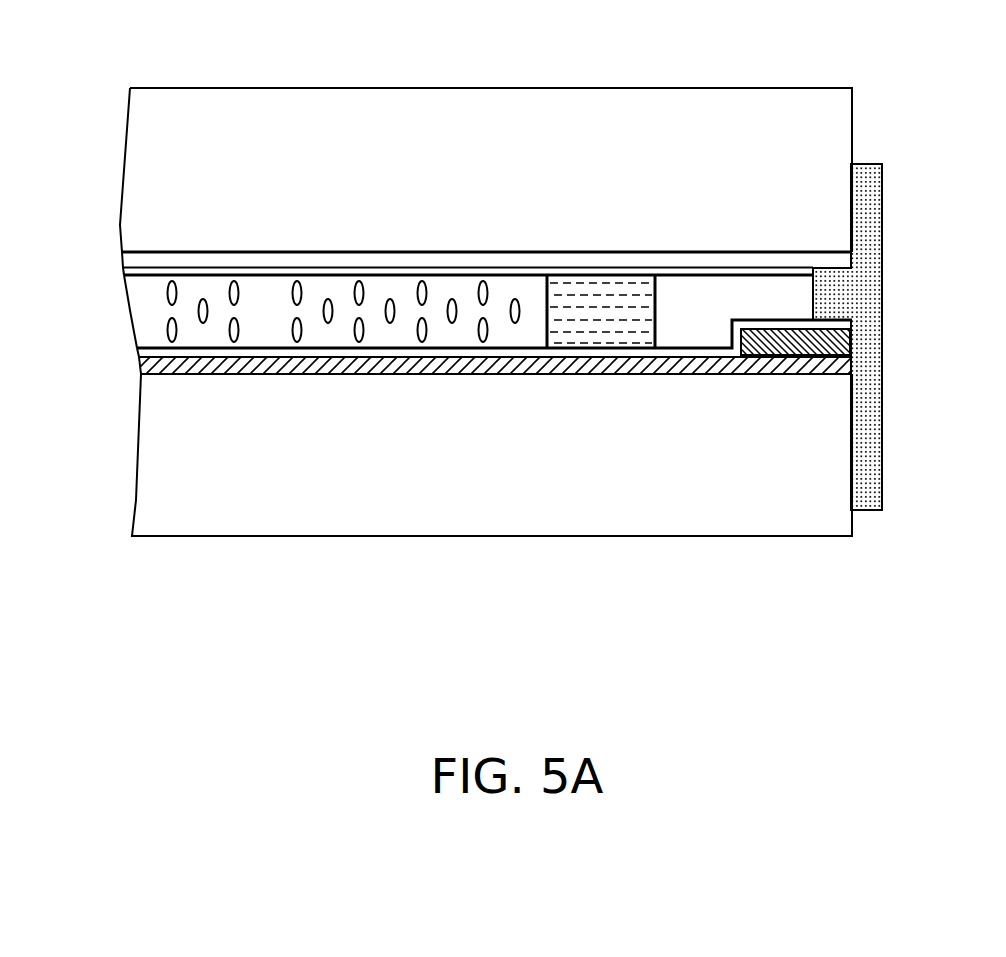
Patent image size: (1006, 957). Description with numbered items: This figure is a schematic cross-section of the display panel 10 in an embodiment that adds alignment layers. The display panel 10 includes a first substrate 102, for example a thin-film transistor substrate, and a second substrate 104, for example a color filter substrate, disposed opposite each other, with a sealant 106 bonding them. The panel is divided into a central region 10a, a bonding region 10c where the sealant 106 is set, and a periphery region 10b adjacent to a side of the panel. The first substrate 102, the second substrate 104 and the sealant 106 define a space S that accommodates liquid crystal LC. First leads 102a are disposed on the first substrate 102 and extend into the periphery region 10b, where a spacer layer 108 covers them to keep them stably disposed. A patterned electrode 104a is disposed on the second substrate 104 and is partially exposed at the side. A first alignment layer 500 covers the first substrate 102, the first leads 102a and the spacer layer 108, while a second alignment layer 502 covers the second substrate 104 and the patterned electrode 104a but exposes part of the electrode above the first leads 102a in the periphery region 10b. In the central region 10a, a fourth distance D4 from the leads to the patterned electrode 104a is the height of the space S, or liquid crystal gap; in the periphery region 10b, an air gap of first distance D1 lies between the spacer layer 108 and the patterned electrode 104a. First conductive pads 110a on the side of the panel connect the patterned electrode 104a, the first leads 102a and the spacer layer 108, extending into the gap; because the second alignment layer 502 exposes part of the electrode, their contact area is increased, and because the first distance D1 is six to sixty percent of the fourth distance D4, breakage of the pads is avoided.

The display panel 10 is at (911, 637).
The central region 10a is at (132, 560).
The periphery region 10b is at (655, 560).
The bonding region 10c is at (547, 560).
The first substrate 102 is at (150, 479).
The first leads 102a is at (164, 375).
The second substrate 104 is at (143, 142).
The patterned electrode 104a is at (168, 256).
The sealant 106 is at (601, 283).
The spacer layer 108 is at (840, 343).
The first conductive pads 110a is at (868, 217).
The first alignment layer 500 is at (137, 350).
The second alignment layer 502 is at (147, 272).
The liquid crystal LC is at (203, 298).
The space S is at (280, 327).
The first distance D1 is at (755, 278).
The fourth distance D4 is at (115, 276).